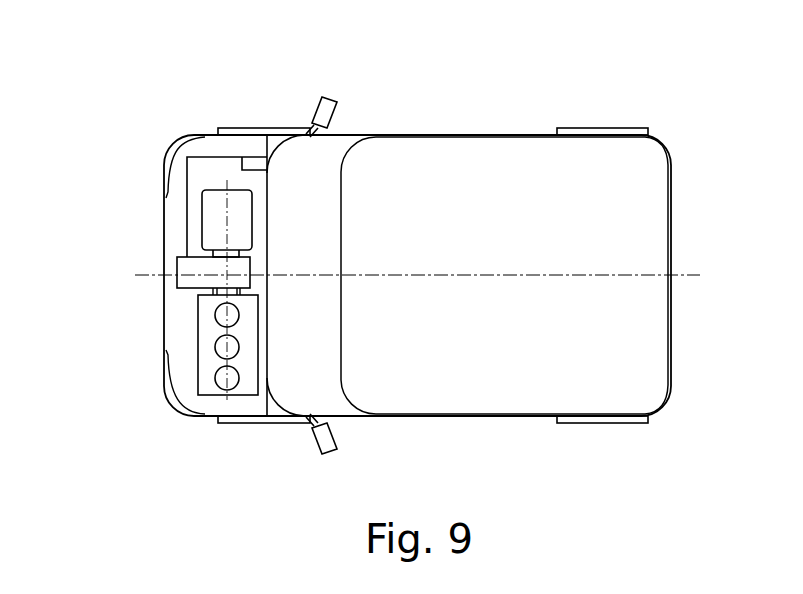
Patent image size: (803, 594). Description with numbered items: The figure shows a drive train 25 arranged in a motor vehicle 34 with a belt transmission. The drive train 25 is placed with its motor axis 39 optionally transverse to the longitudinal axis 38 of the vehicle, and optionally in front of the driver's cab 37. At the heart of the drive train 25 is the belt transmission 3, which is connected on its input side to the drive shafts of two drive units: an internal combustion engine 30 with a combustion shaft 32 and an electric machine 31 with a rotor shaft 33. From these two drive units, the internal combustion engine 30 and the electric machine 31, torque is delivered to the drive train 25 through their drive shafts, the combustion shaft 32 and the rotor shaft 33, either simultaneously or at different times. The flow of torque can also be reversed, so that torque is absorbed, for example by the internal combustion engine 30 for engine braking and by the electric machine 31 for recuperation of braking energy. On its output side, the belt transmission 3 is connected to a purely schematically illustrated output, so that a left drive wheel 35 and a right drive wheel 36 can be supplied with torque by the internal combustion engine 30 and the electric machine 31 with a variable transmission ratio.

The motor vehicle 34 is at (663, 62).
The right drive wheel 36 is at (232, 128).
The left drive wheel 35 is at (230, 423).
The driver's cab 37 is at (420, 157).
The longitudinal axis 38 is at (448, 275).
The motor axis 39 is at (190, 415).
The drive train 25 is at (88, 206).
The electric machine 31 is at (210, 212).
The rotor shaft 33 is at (213, 249).
The belt transmission 3 is at (178, 278).
The combustion shaft 32 is at (200, 295).
The internal combustion engine 30 is at (203, 333).